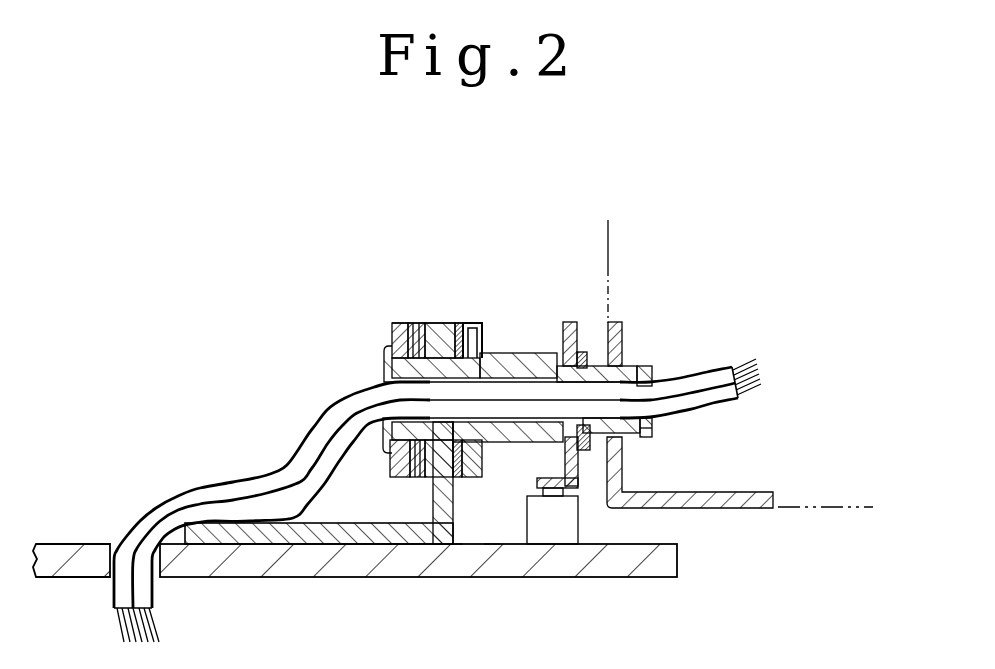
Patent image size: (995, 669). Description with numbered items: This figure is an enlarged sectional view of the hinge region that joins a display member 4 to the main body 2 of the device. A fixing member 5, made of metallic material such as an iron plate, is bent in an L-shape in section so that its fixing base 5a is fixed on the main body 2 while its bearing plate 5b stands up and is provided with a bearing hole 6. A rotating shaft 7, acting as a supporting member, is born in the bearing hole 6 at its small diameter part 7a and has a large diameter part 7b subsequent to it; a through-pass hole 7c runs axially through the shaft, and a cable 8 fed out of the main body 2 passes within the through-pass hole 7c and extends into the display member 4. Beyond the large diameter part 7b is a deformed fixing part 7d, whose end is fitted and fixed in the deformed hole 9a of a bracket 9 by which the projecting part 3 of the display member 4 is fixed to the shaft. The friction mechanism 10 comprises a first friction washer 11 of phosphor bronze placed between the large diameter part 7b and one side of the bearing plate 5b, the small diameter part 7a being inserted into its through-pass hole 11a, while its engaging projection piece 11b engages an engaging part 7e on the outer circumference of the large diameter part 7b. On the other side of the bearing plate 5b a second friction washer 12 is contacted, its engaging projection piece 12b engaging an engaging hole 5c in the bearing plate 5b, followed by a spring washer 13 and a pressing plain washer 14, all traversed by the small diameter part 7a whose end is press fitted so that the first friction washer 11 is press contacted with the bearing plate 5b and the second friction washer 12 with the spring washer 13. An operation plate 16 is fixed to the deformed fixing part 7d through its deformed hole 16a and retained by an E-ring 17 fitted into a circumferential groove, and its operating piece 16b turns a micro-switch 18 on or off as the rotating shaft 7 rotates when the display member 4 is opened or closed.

The main body 2 is at (90, 543).
The projecting part 3 is at (838, 507).
The display member 4 is at (797, 523).
The fixing member 5 is at (310, 546).
The fixing base 5a is at (367, 536).
The bearing plate 5b is at (493, 546).
The engaging hole 5c is at (458, 546).
The bearing hole 6 is at (459, 323).
The rotating shaft 7 is at (513, 354).
The small diameter part 7a is at (385, 365).
The large diameter part 7b is at (482, 352).
The through-pass hole 7c is at (440, 383).
The deformed fixing part 7d is at (640, 365).
The engaging part 7e is at (628, 364).
The cable 8 is at (240, 485).
The bracket 9 is at (698, 492).
The deformed hole 9a is at (652, 428).
The friction mechanism 10 is at (446, 300).
The first friction washer 11 is at (464, 456).
The through-pass hole 11a is at (491, 436).
The engaging projection piece 11b is at (473, 323).
The second friction washer 12 is at (429, 323).
The engaging projection piece 12b is at (433, 480).
The spring washer 13 is at (413, 323).
The pressing plain washer 14 is at (390, 340).
The operation plate 16 is at (583, 345).
The deformed hole 16a is at (556, 344).
The operating piece 16b is at (578, 488).
The E-ring 17 is at (588, 446).
The micro-switch 18 is at (553, 534).